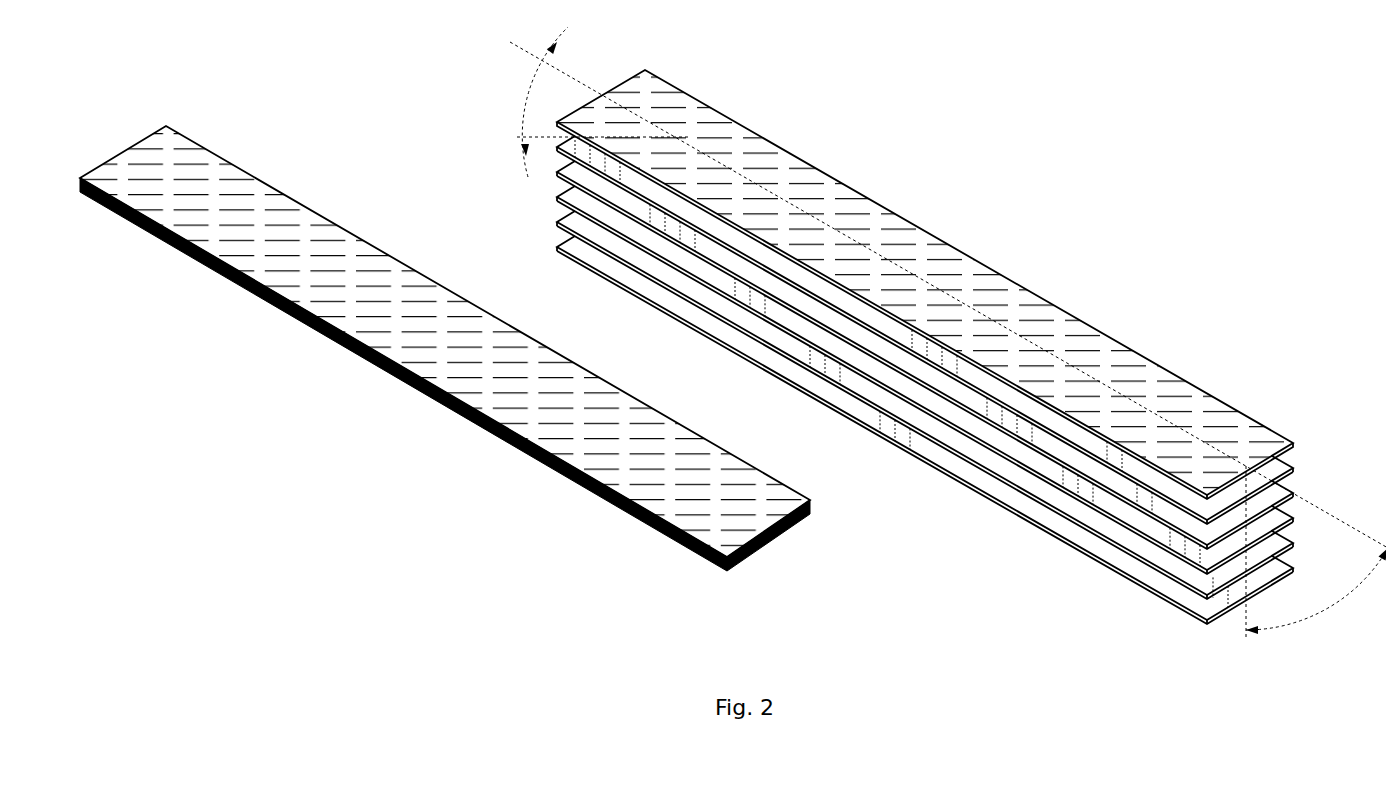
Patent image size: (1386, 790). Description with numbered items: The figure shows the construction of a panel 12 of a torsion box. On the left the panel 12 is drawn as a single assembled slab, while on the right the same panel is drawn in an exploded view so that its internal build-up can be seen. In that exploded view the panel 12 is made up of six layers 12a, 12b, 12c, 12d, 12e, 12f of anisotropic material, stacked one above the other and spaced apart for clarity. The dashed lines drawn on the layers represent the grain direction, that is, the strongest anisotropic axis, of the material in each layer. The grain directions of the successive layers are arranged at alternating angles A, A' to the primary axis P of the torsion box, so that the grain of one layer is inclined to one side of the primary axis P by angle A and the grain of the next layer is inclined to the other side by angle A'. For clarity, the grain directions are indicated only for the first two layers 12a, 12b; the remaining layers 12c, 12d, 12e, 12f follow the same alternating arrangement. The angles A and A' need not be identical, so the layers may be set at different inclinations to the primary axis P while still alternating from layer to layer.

The panel 12 is at (412, 435).
The first layer 12a is at (1270, 430).
The second layer 12b is at (1020, 415).
The third layer 12c is at (1025, 442).
The fourth layer 12d is at (1030, 468).
The fifth layer 12e is at (1033, 495).
The sixth layer 12f is at (1035, 522).
The primary axis P is at (800, 210).
The angle A is at (592, 102).
The angle A' is at (1316, 551).